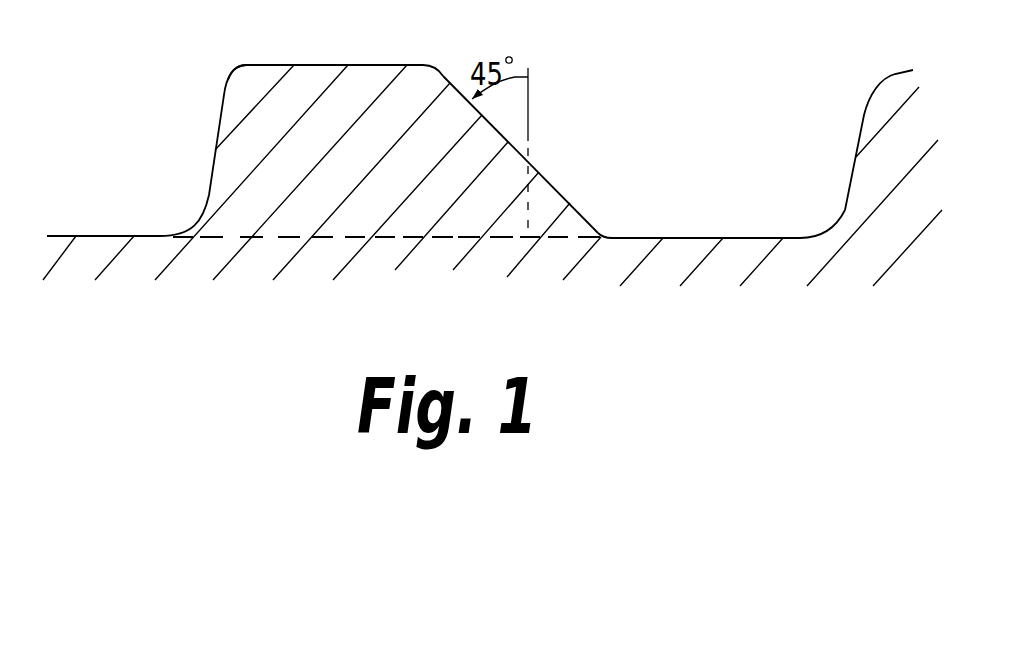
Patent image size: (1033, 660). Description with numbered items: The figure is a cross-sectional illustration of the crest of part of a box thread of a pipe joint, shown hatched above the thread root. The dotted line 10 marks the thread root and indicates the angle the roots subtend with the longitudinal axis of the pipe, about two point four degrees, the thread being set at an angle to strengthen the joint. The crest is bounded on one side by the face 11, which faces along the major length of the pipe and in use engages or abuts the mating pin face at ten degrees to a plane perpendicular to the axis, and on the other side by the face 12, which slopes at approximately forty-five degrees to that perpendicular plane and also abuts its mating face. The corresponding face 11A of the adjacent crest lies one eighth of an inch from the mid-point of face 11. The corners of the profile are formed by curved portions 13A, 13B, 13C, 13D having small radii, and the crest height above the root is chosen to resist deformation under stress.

The dotted line 10 is at (567, 232).
The face 11 is at (213, 142).
The corresponding face of the adjacent crest 11A is at (860, 140).
The face 12 is at (527, 160).
The curved portion 13A is at (234, 77).
The curved portion 13B is at (432, 76).
The curved portion 13C is at (608, 229).
The curved portion 13D is at (826, 231).